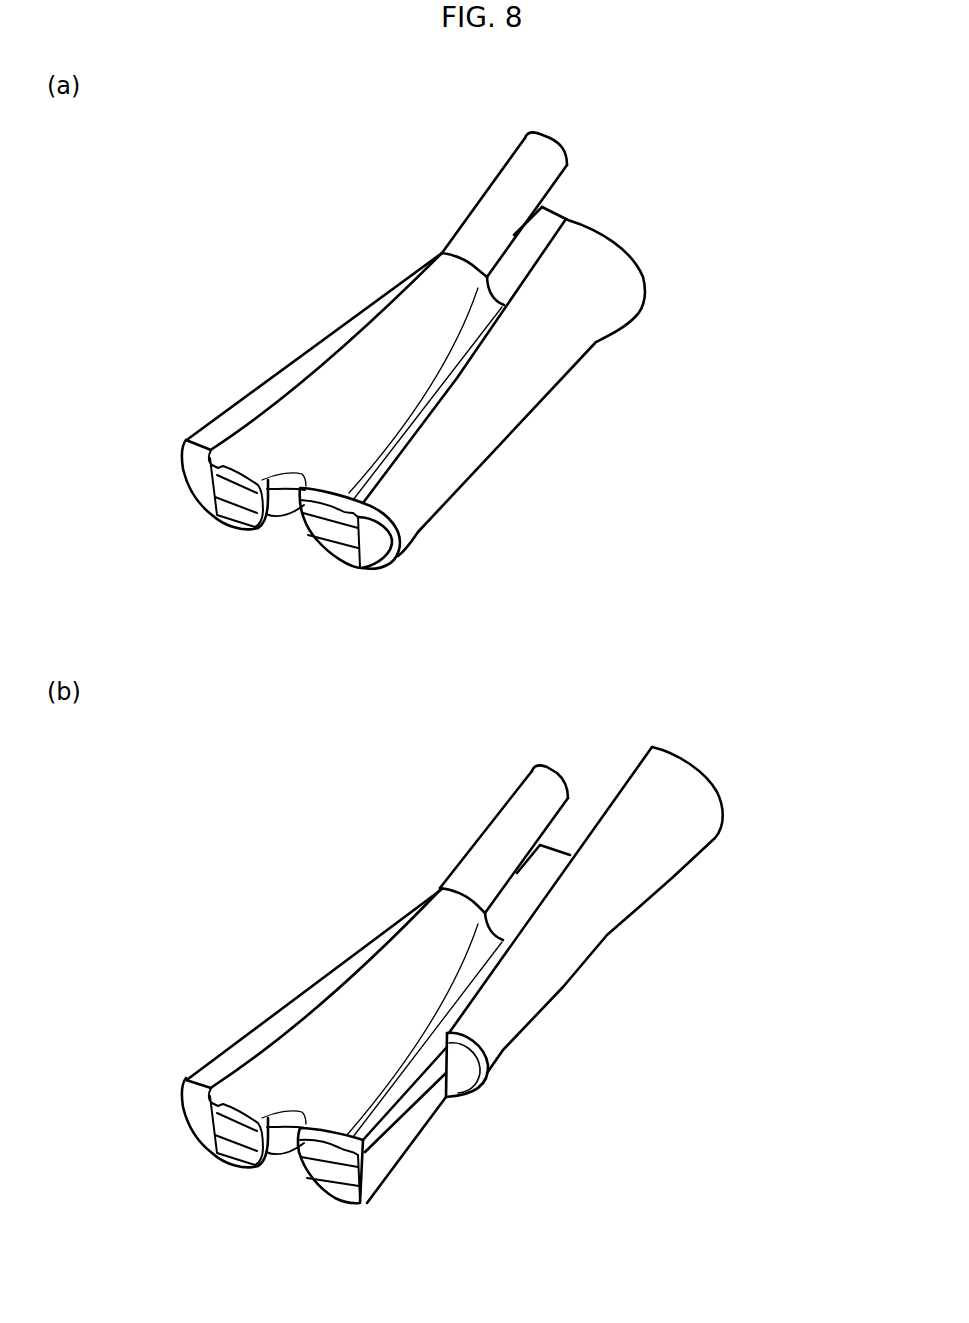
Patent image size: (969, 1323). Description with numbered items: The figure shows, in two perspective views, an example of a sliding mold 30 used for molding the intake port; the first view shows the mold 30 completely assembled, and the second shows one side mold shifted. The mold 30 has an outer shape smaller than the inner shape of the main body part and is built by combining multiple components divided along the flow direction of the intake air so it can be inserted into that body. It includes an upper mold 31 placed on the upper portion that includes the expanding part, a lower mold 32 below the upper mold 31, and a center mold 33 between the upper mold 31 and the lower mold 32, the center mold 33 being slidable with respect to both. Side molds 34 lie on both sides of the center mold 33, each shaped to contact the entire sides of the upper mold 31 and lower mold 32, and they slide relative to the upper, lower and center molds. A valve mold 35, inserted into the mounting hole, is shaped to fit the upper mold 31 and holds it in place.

The mold 30 is at (191, 235).
The upper mold 31 is at (365, 367).
The lower mold 32 is at (327, 550).
The center mold 33 is at (238, 502).
The side molds 34 is at (270, 388).
The valve mold 35 is at (513, 173).